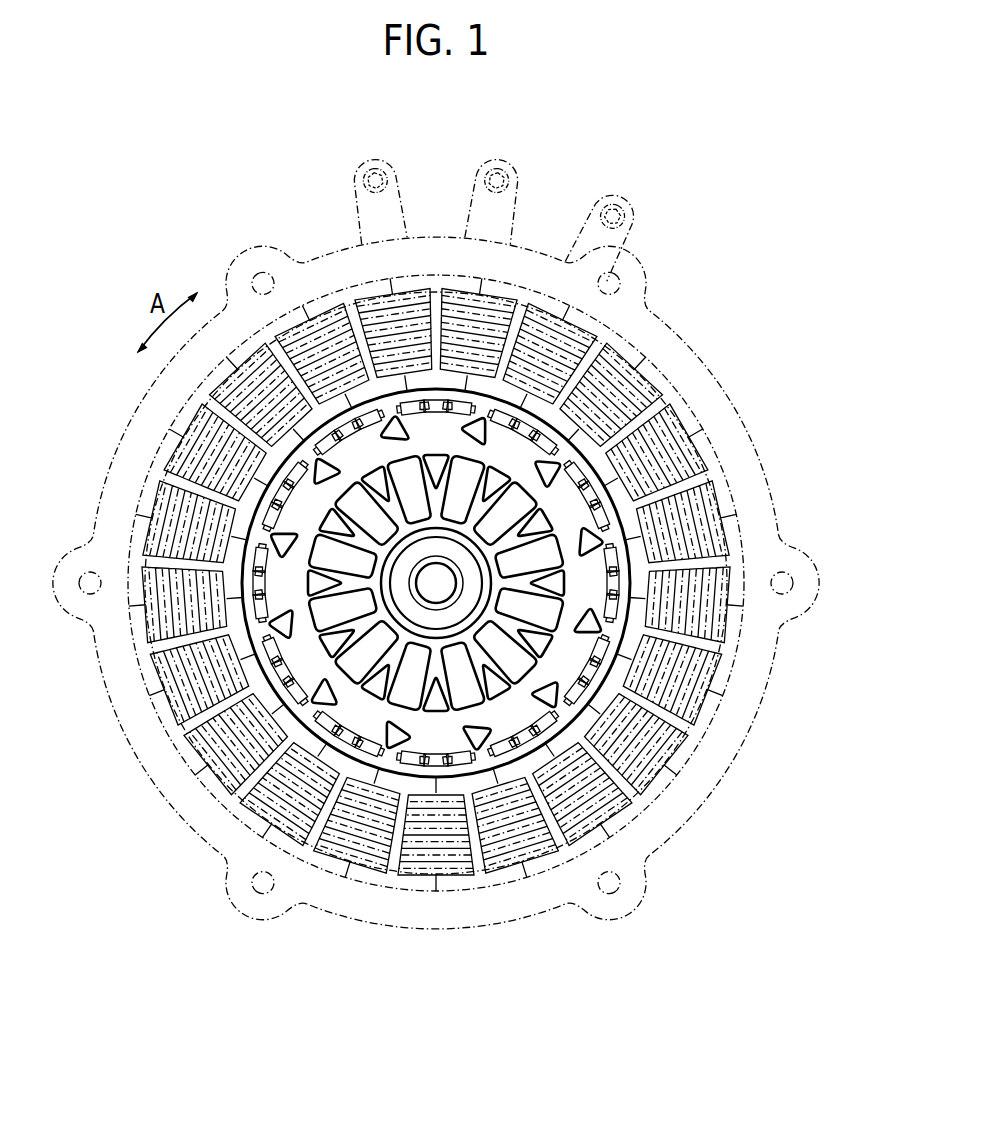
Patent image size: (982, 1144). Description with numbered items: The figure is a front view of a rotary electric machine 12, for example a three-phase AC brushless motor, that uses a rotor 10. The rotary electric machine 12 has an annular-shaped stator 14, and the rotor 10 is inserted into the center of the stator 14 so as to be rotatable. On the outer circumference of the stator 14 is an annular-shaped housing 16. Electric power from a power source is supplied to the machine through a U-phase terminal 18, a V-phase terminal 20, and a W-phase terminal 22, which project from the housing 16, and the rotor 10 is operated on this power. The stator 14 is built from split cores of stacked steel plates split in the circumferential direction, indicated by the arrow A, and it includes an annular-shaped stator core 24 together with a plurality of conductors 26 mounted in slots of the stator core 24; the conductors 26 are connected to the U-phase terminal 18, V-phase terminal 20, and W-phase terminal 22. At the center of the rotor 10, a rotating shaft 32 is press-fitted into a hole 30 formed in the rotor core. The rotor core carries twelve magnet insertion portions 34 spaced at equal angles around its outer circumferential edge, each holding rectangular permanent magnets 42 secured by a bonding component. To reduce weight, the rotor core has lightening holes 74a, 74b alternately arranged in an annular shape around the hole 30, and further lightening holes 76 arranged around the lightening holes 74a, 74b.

The rotor 10 is at (434, 696).
The rotary electric machine 12 is at (436, 508).
The stator 14 is at (435, 583).
The housing 16 is at (734, 695).
The U-phase terminal 18 is at (378, 174).
The V-phase terminal 20 is at (496, 174).
The W-phase terminal 22 is at (611, 213).
The stator core 24 is at (438, 583).
The conductors 26 is at (472, 583).
The hole 30 is at (557, 705).
The rotating shaft 32 is at (434, 389).
The magnet insertion portions 34 is at (353, 583).
The permanent magnet 42 is at (348, 583).
The lightening holes 74a is at (436, 718).
The lightening holes 74b is at (436, 726).
The lightening holes 76 is at (436, 696).